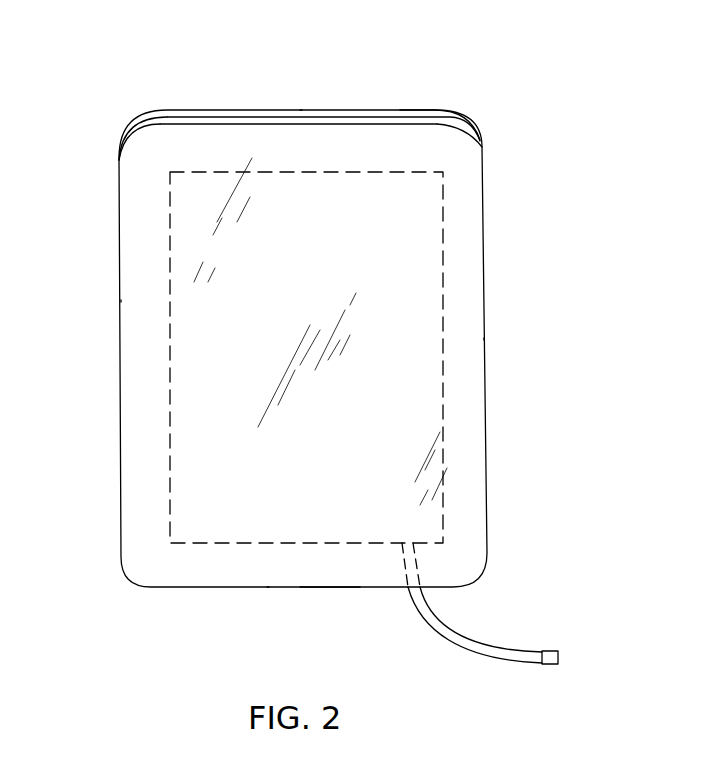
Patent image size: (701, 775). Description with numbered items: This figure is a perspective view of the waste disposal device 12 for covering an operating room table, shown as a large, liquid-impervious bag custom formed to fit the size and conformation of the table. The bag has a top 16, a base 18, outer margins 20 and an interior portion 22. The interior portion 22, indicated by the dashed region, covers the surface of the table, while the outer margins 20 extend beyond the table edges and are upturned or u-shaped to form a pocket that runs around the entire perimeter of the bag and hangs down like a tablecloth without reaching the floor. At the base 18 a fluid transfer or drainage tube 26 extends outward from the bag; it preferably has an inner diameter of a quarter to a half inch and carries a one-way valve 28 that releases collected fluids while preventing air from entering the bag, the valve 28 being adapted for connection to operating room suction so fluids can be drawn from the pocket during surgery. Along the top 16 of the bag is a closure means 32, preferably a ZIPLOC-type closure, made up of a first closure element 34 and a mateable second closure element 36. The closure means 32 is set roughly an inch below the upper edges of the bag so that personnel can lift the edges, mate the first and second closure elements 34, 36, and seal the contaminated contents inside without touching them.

The waste disposal device 12 is at (504, 251).
The top 16 is at (180, 125).
The base 18 is at (333, 591).
The outer margins 20 is at (300, 138).
The interior portion 22 is at (437, 400).
The drainage tube 26 is at (491, 648).
The one-way valve 28 is at (558, 657).
The closure means 32 is at (393, 113).
The first closure element 34 is at (482, 147).
The second closure element 36 is at (437, 110).